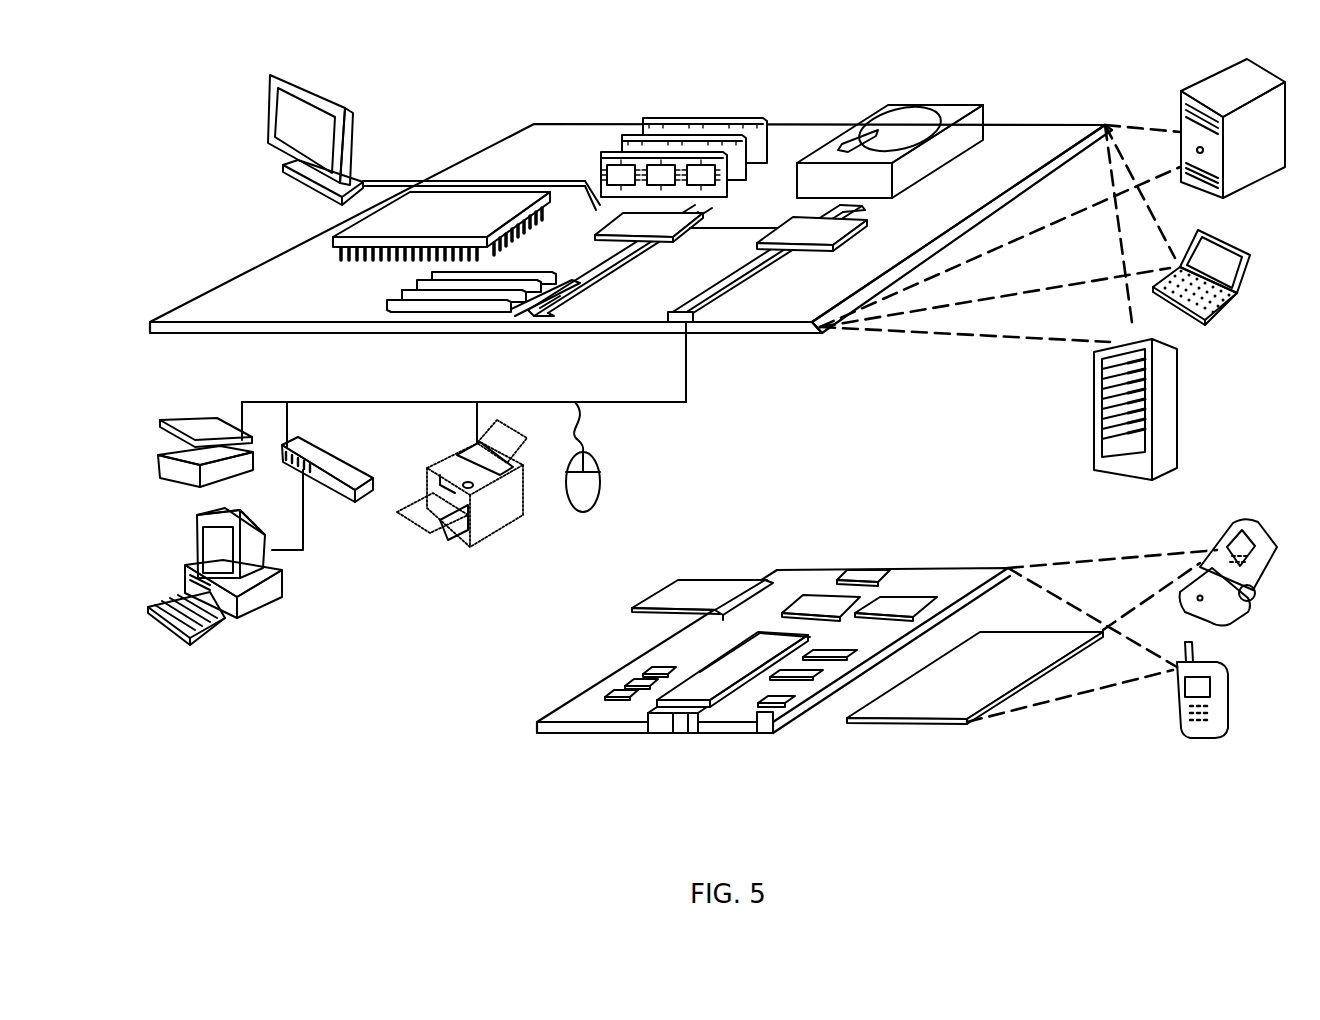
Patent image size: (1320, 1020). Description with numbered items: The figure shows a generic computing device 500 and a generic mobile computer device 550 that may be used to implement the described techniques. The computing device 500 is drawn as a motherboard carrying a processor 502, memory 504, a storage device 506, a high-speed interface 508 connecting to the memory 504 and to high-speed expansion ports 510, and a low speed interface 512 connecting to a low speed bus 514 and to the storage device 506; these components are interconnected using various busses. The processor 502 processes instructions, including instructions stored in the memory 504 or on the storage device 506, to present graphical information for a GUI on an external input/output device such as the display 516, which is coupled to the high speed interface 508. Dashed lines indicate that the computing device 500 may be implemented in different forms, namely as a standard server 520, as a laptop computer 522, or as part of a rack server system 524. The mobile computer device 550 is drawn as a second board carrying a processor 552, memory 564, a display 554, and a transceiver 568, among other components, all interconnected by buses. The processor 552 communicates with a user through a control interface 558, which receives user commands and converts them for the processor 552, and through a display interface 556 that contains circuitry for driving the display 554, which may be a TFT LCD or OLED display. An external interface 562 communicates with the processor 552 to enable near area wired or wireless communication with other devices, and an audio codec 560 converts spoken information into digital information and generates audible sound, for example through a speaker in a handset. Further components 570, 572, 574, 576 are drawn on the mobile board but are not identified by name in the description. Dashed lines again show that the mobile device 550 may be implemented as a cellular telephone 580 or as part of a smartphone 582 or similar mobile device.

The computing device 500 is at (452, 58).
The processor 502 is at (340, 240).
The memory 504 is at (650, 88).
The storage device 506 is at (884, 112).
The high-speed interface 508 is at (602, 218).
The high-speed expansion ports 510 is at (405, 298).
The low speed interface 512 is at (795, 222).
The low speed bus 514 is at (696, 322).
The display 516 is at (273, 78).
The standard server 520 is at (1183, 105).
The laptop computer 522 is at (1245, 252).
The rack server system 524 is at (1095, 432).
The mobile computer device 550 is at (505, 735).
The processor 552 is at (708, 694).
The display 554 is at (940, 712).
The display interface 556 is at (772, 703).
The control interface 558 is at (822, 672).
The audio codec 560 is at (836, 662).
The external interface 562 is at (676, 712).
The memory 564 is at (628, 686).
The transceiver 568 is at (902, 604).
The chip 570 is at (865, 580).
The slot 572 is at (748, 582).
The module 574 is at (676, 582).
The module 576 is at (822, 605).
The cellular telephone 580 is at (1234, 530).
The smartphone 582 is at (1176, 695).